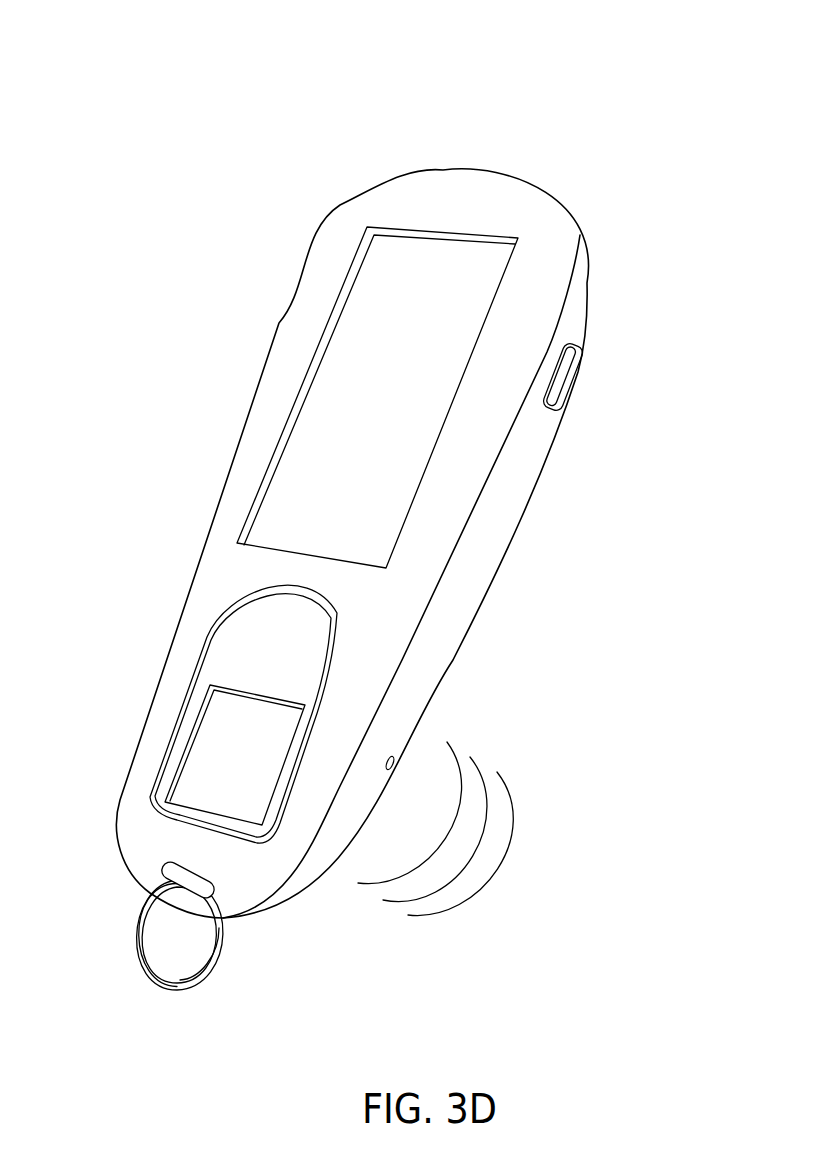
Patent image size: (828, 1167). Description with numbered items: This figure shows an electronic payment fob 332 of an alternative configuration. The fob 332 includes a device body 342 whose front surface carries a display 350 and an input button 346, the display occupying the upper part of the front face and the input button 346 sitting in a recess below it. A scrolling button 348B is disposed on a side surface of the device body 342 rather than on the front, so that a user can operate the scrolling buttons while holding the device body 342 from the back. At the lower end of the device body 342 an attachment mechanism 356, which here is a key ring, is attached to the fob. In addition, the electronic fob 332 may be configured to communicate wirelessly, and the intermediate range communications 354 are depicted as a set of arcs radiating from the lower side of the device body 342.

The electronic fob 332 is at (343, 95).
The device body 342 is at (297, 328).
The input button 346 is at (220, 753).
The scrolling button 348B is at (570, 390).
The display 350 is at (477, 275).
The intermediate range communications 354 is at (494, 862).
The attachment mechanism 356 is at (152, 955).